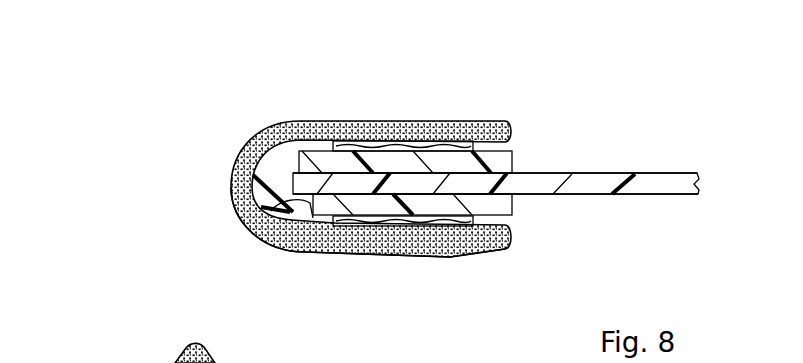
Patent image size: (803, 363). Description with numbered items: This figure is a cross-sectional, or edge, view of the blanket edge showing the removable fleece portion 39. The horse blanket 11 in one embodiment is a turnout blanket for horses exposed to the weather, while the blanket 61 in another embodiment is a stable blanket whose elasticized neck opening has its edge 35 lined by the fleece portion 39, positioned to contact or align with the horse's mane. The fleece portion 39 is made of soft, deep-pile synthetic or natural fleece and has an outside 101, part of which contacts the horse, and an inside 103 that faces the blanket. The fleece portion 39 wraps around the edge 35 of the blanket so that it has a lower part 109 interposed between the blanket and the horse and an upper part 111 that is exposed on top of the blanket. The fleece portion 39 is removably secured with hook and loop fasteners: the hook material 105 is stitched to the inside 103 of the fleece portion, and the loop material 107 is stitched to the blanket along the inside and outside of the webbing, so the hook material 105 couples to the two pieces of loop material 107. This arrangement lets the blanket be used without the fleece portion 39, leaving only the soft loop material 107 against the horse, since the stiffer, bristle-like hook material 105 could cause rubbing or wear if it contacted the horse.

The horse blanket 11 is at (605, 174).
The blanket 61 is at (605, 174).
The edge 35 is at (265, 185).
The fleece portion 39 is at (253, 138).
The outside 101 is at (290, 245).
The inside 103 is at (240, 222).
The hook material 105 is at (355, 141).
The loop material 107 is at (355, 141).
The lower part 109 is at (403, 255).
The upper part 111 is at (407, 125).